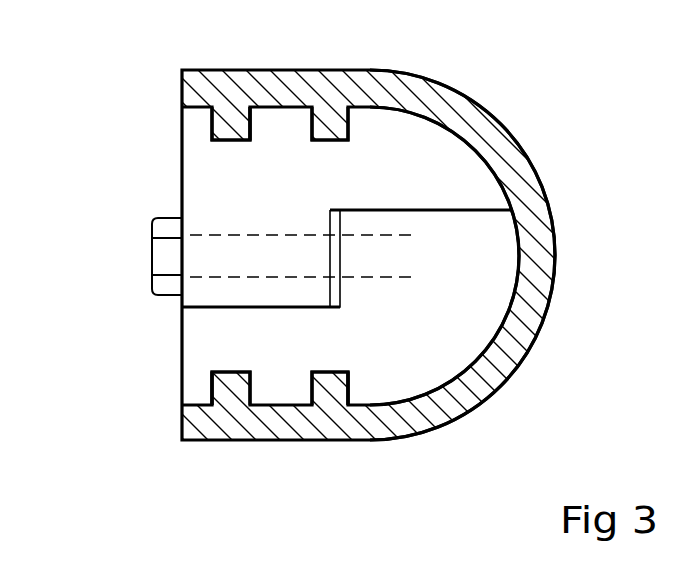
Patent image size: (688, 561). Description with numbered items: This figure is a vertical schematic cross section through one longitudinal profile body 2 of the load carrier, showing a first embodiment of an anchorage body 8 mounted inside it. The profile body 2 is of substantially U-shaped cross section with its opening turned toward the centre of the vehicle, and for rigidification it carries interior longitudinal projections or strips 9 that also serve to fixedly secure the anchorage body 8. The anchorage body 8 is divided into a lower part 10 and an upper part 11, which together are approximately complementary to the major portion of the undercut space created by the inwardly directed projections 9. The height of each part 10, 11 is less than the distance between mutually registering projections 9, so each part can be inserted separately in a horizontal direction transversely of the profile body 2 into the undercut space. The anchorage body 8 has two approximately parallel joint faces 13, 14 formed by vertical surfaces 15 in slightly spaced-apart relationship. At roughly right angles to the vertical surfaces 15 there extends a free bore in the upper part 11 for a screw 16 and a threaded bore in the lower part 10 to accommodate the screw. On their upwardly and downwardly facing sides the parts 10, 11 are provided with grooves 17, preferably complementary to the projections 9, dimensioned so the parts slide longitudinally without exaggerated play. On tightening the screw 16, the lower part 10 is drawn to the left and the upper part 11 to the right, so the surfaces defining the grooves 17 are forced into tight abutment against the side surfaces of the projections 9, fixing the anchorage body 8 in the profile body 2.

The longitudinal profile body 2 is at (510, 157).
The anchorage body 8 is at (72, 150).
The projections or strips 9 is at (231, 120).
The lower part 10 is at (438, 338).
The upper part 11 is at (405, 172).
The joint face 13 is at (465, 213).
The joint face 14 is at (215, 310).
The vertical surfaces 15 is at (342, 305).
The screw 16 is at (170, 256).
The grooves 17 is at (250, 128).